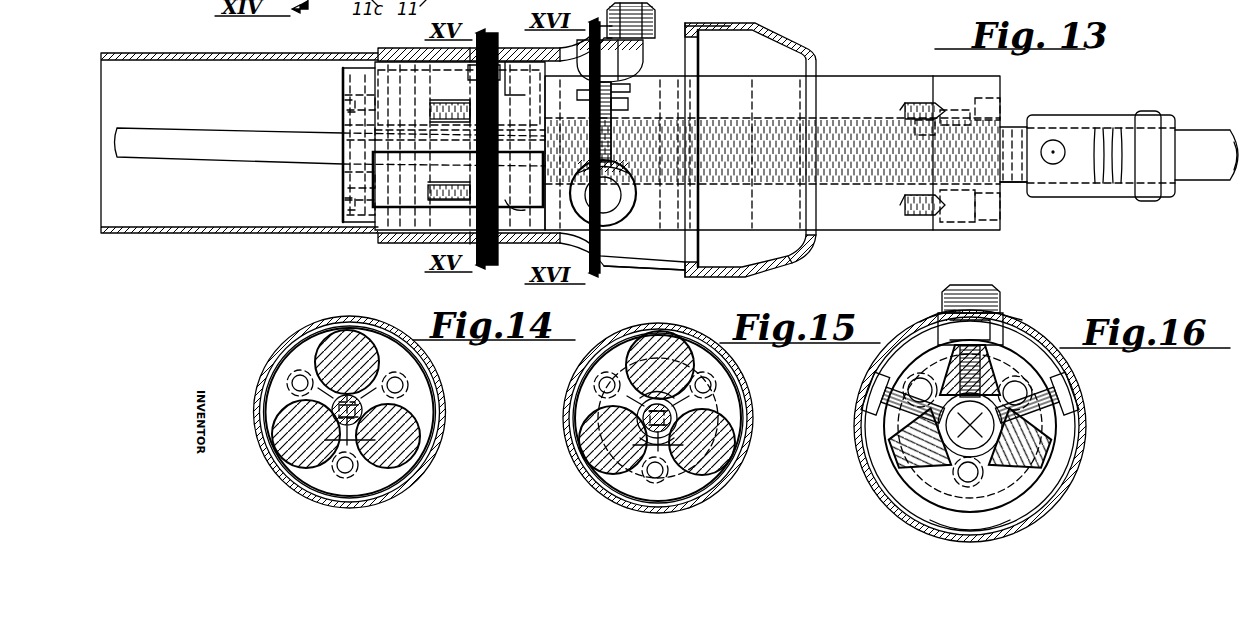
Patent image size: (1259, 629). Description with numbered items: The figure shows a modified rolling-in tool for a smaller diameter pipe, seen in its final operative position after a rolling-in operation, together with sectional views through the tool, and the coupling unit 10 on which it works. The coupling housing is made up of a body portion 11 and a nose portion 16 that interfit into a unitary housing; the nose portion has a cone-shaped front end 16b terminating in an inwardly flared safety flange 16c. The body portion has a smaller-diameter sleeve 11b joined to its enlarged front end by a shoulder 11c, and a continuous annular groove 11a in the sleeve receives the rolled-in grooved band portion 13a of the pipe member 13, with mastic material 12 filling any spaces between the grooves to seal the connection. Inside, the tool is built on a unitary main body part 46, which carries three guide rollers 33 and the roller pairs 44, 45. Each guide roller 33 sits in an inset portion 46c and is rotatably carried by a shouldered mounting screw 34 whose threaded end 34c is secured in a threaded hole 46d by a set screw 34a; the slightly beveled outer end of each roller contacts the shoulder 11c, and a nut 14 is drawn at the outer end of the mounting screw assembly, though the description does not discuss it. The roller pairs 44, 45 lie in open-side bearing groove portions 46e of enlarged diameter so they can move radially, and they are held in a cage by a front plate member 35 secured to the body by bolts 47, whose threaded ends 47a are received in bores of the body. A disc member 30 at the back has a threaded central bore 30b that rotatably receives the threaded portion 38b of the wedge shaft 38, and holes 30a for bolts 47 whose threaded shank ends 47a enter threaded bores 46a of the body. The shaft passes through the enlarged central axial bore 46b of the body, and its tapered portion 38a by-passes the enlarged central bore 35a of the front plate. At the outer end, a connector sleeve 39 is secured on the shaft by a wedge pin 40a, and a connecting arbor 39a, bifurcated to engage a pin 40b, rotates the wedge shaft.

In FIG. 13, the coupling unit 10 is at (730, 25).
In FIG. 16, the coupling unit 10 is at (924, 318).
In FIG. 13, the body portion 11 is at (656, 262).
In FIG. 16, the body portion 11 is at (1012, 332).
In FIG. 13, the annular groove 11a is at (477, 58).
In FIG. 13, the sleeve 11b is at (425, 238).
In FIG. 14, the sleeve 11b is at (340, 320).
In FIG. 15, the sleeve 11b is at (648, 330).
In FIG. 13, the shoulder 11c is at (572, 58).
In FIG. 16, the shoulder 11c is at (1072, 356).
In FIG. 14, the mastic material 12 is at (366, 322).
In FIG. 13, the pipe member 13 is at (178, 54).
In FIG. 14, the pipe member 13 is at (389, 335).
In FIG. 15, the pipe member 13 is at (736, 420).
In FIG. 16, the pipe member 13 is at (1086, 404).
In FIG. 13, the rolled-in grooved band portion 13a is at (484, 72).
In FIG. 15, the rolled-in grooved band portion 13a is at (732, 410).
In FIG. 16, the nut 14 is at (942, 290).
In FIG. 13, the nose portion 16 is at (718, 272).
In FIG. 13, the tapered front end 16b is at (782, 262).
In FIG. 13, the safety flange 16c is at (816, 238).
In FIG. 13, the disc member 30 is at (978, 76).
In FIG. 13, the bolt holes 30a is at (950, 220).
In FIG. 13, the threaded central bore 30b is at (955, 126).
In FIG. 13, the guide roller 33 is at (636, 66).
In FIG. 16, the guide roller 33 is at (1006, 336).
In FIG. 13, the mounting screw 34 is at (615, 50).
In FIG. 16, the mounting screw 34 is at (988, 322).
In FIG. 13, the set screw 34a is at (597, 98).
In FIG. 13, the threaded end 34c is at (614, 104).
In FIG. 16, the threaded end 34c is at (962, 500).
In FIG. 13, the front plate member 35 is at (343, 73).
In FIG. 13, the enlarged central bore 35a is at (346, 118).
In FIG. 14, the enlarged central bore 35a is at (395, 445).
In FIG. 15, the enlarged central bore 35a is at (590, 478).
In FIG. 13, the wedge shaft 38 is at (1010, 192).
In FIG. 13, the tapered portion 38a is at (255, 158).
In FIG. 14, the tapered portion 38a is at (300, 462).
In FIG. 15, the tapered portion 38a is at (705, 430).
In FIG. 13, the threaded portion 38b is at (857, 185).
In FIG. 16, the threaded portion 38b is at (1003, 440).
In FIG. 13, the connector sleeve 39 is at (1110, 115).
In FIG. 13, the connecting arbor 39a is at (1222, 182).
In FIG. 13, the wedge pin 40a is at (1056, 143).
In FIG. 13, the pin 40b is at (1150, 112).
In FIG. 13, the roller pair 44 is at (516, 72).
In FIG. 14, the roller pair 44 is at (332, 347).
In FIG. 15, the roller pair 44 is at (700, 360).
In FIG. 16, the roller pair 44 is at (882, 376).
In FIG. 13, the roller pair 45 is at (405, 68).
In FIG. 15, the roller pair 45 is at (688, 334).
In FIG. 16, the roller pair 45 is at (885, 422).
In FIG. 13, the main body part 46 is at (857, 76).
In FIG. 14, the main body part 46 is at (410, 370).
In FIG. 15, the main body part 46 is at (685, 490).
In FIG. 16, the main body part 46 is at (930, 360).
In FIG. 13, the threaded bore 46a is at (922, 216).
In FIG. 13, the central axial bore 46b is at (770, 125).
In FIG. 14, the central axial bore 46b is at (380, 420).
In FIG. 15, the central axial bore 46b is at (620, 402).
In FIG. 16, the central axial bore 46b is at (1028, 530).
In FIG. 13, the inset portion 46c is at (628, 86).
In FIG. 16, the threaded hole 46d is at (1056, 386).
In FIG. 14, the bearing groove portion 46e is at (330, 400).
In FIG. 15, the bearing groove portion 46e is at (620, 392).
In FIG. 13, the bolt 47 is at (356, 100).
In FIG. 14, the bolt 47 is at (295, 365).
In FIG. 15, the bolt 47 is at (590, 368).
In FIG. 16, the bolt 47 is at (890, 394).
In FIG. 13, the threaded shank end portion 47a is at (920, 118).